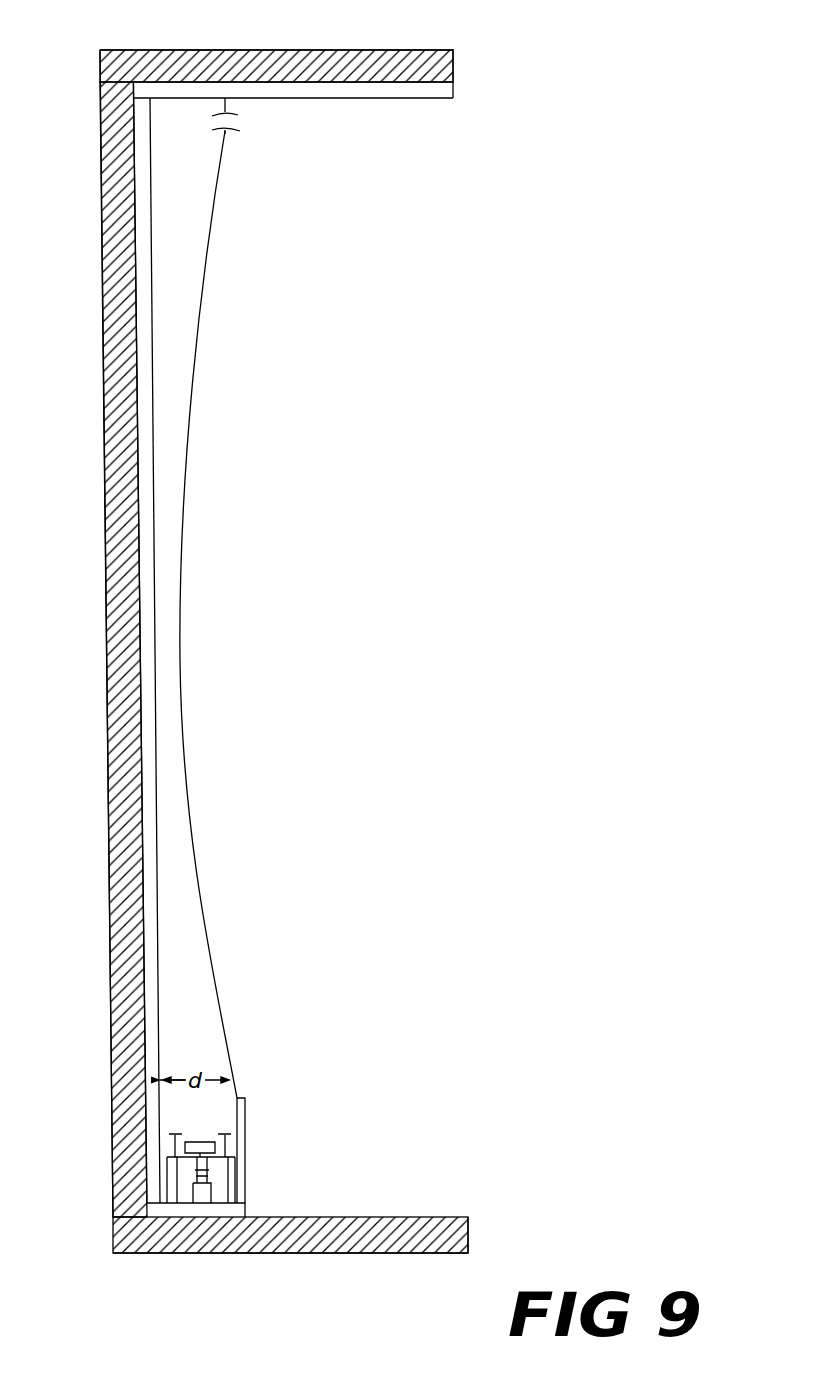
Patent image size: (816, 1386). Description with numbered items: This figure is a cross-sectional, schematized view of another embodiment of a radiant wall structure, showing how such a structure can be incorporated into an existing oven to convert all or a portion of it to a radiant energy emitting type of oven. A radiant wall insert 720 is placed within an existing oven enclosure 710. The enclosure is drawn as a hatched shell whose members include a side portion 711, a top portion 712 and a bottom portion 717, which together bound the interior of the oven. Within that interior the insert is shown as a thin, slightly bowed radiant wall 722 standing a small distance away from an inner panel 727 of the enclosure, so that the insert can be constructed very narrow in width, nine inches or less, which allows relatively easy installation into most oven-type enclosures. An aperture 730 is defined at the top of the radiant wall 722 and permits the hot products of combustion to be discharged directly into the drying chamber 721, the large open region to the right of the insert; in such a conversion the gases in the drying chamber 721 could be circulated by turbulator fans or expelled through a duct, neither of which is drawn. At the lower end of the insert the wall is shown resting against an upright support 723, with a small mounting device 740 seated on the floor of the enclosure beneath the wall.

The oven enclosure 710 is at (126, 36).
The side wall 711 is at (117, 636).
The top wall 712 is at (333, 51).
The bottom wall 717 is at (245, 1238).
The radiant wall insert 720 is at (190, 504).
The drying chamber 721 is at (406, 446).
The radiant wall 722 is at (196, 354).
The support post 723 is at (247, 1141).
The back panel 727 is at (159, 1066).
The aperture 730 is at (233, 128).
The tensioning device 740 is at (204, 1128).